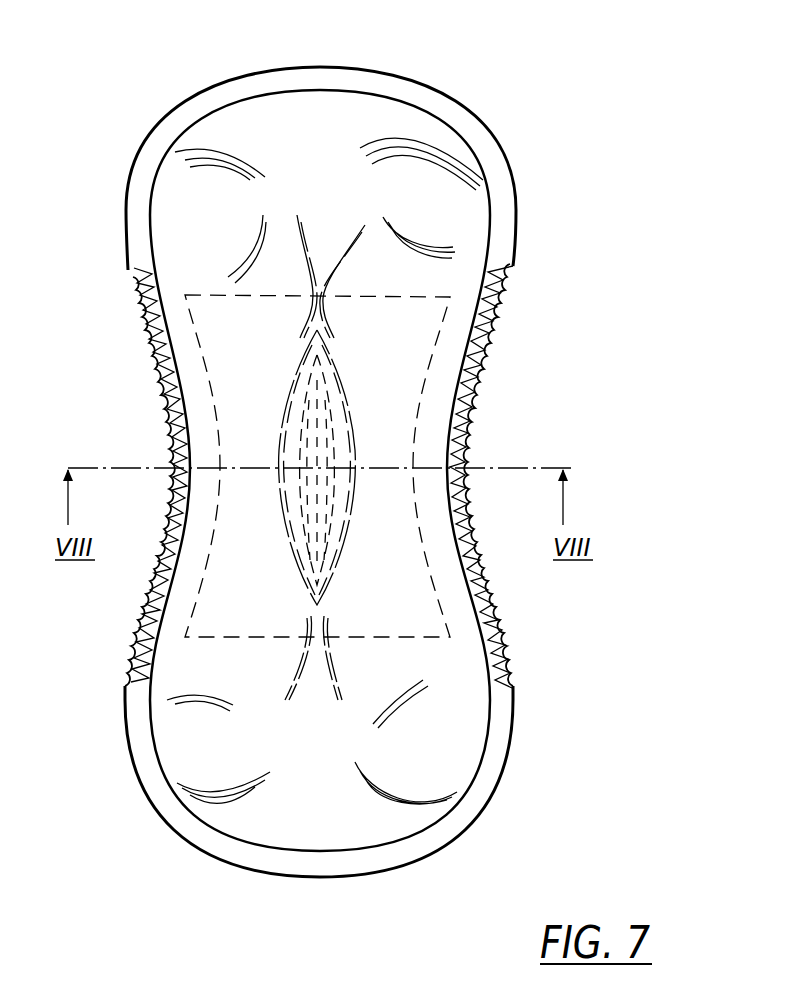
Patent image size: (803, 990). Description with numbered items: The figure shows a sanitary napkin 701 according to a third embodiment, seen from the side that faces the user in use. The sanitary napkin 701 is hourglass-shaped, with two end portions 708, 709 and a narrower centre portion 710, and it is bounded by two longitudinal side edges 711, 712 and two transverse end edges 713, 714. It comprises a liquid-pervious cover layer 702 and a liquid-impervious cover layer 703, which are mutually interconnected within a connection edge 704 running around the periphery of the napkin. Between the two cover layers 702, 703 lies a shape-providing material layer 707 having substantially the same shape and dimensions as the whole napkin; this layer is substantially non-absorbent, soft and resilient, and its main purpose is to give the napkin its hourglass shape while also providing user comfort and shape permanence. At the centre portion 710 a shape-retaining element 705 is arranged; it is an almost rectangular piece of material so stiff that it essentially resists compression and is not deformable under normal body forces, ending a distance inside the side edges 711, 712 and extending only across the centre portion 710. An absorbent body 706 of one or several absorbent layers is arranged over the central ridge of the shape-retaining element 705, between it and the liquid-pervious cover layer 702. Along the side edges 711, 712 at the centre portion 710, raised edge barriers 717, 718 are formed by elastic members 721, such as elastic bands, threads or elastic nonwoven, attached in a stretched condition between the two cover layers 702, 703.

The sanitary napkin 701 is at (556, 83).
The liquid-pervious cover layer 702 is at (404, 152).
The liquid-impervious cover layer 703 is at (170, 818).
The connection edge 704 is at (450, 773).
The shape-retaining element 705 is at (380, 630).
The absorbent body 706 is at (322, 423).
The shape-providing material layer 707 is at (348, 820).
The end portion 708 is at (300, 115).
The end portion 709 is at (280, 806).
The centre portion 710 is at (390, 455).
The longitudinal side edge 711 is at (160, 385).
The longitudinal side edge 712 is at (500, 630).
The transverse end edge 713 is at (232, 73).
The transverse end edge 714 is at (313, 877).
The raised edge barrier 717 is at (160, 577).
The raised edge barrier 718 is at (450, 540).
The elastic members 721 is at (497, 285).